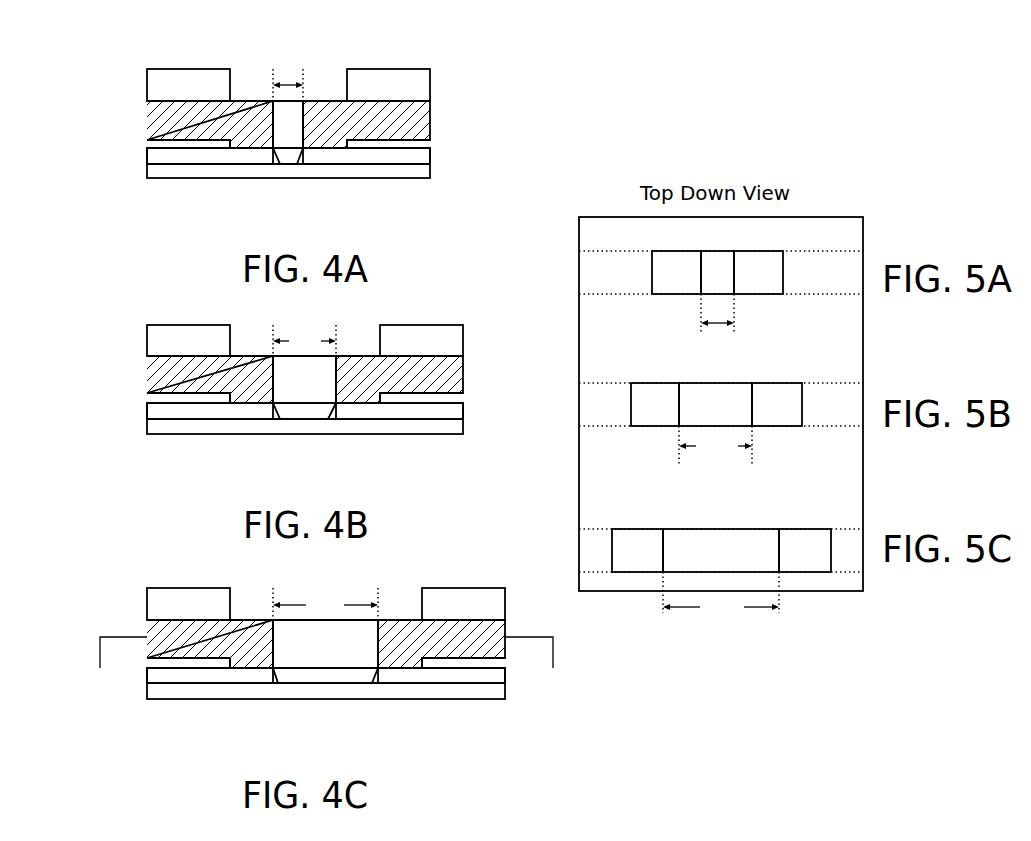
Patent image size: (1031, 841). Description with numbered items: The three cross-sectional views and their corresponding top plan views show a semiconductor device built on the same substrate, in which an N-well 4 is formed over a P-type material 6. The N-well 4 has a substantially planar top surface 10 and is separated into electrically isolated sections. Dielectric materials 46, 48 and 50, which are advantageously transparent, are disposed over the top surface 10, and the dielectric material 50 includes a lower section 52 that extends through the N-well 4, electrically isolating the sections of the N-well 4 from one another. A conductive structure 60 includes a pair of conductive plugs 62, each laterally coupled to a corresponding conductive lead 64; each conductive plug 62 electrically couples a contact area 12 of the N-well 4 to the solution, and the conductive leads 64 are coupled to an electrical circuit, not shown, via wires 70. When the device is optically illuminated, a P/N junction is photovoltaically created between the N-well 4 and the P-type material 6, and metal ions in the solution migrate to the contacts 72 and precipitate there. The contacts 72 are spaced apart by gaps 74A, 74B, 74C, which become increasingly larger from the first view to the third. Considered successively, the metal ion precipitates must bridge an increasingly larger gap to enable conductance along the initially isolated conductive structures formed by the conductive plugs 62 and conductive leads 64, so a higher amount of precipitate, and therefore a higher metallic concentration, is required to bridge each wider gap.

In FIG. 4A, the N-well 4 is at (248, 157).
In FIG. 4B, the N-well 4 is at (232, 412).
In FIG. 4C, the N-well 4 is at (215, 675).
In FIG. 4A, the P-type material 6 is at (218, 172).
In FIG. 4B, the P-type material 6 is at (343, 425).
In FIG. 4C, the P-type material 6 is at (443, 690).
In FIG. 4A, the top surface 10 is at (178, 150).
In FIG. 4B, the top surface 10 is at (175, 405).
In FIG. 4C, the top surface 10 is at (173, 670).
In FIG. 4A, the contact area 12 is at (333, 150).
In FIG. 4B, the contact area 12 is at (373, 405).
In FIG. 4C, the contact area 12 is at (392, 670).
In FIG. 4A, the dielectric material 46 is at (430, 145).
In FIG. 4B, the dielectric material 46 is at (463, 400).
In FIG. 4C, the dielectric material 46 is at (505, 663).
In FIG. 4A, the dielectric material 48 is at (178, 96).
In FIG. 4B, the dielectric material 48 is at (178, 350).
In FIG. 4C, the dielectric material 48 is at (178, 613).
In FIG. 4A, the dielectric material 50 is at (278, 131).
In FIG. 4B, the dielectric material 50 is at (294, 386).
In FIG. 4C, the dielectric material 50 is at (316, 647).
In FIG. 5A, the dielectric material 50 is at (715, 257).
In FIG. 5B, the dielectric material 50 is at (705, 414).
In FIG. 5C, the dielectric material 50 is at (705, 559).
In FIG. 4A, the lower section 52 is at (287, 158).
In FIG. 4B, the lower section 52 is at (306, 412).
In FIG. 4C, the lower section 52 is at (325, 675).
In FIG. 4A, the conductive structure 60 is at (430, 103).
In FIG. 4B, the conductive structure 60 is at (148, 364).
In FIG. 4C, the conductive structure 60 is at (148, 628).
In FIG. 4A, the conductive plug 62 is at (243, 137).
In FIG. 4B, the conductive plug 62 is at (242, 393).
In FIG. 4C, the conductive plug 62 is at (243, 654).
In FIG. 4A, the conductive lead 64 is at (184, 127).
In FIG. 4B, the conductive lead 64 is at (185, 382).
In FIG. 4C, the conductive lead 64 is at (185, 644).
In FIG. 4C, the wire 70 is at (93, 658).
In FIG. 4A, the contact 72 is at (247, 100).
In FIG. 4B, the contact 72 is at (353, 355).
In FIG. 4C, the contact 72 is at (248, 618).
In FIG. 5A, the contact 72 is at (664, 283).
In FIG. 5B, the contact 72 is at (643, 414).
In FIG. 5C, the contact 72 is at (627, 559).
In FIG. 4A, the gap 74A is at (289, 80).
In FIG. 5A, the gap 74A is at (720, 327).
In FIG. 4B, the gap 74B is at (304, 340).
In FIG. 5B, the gap 74B is at (715, 445).
In FIG. 4C, the gap 74C is at (325, 604).
In FIG. 5C, the gap 74C is at (721, 594).